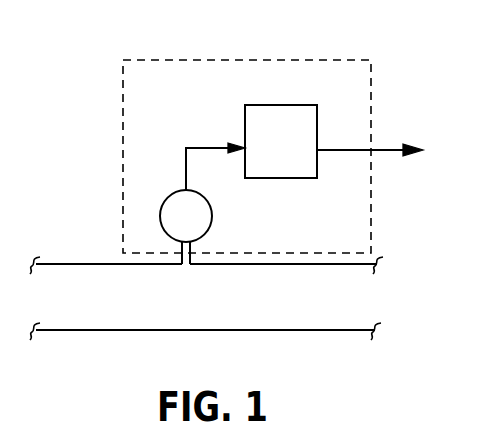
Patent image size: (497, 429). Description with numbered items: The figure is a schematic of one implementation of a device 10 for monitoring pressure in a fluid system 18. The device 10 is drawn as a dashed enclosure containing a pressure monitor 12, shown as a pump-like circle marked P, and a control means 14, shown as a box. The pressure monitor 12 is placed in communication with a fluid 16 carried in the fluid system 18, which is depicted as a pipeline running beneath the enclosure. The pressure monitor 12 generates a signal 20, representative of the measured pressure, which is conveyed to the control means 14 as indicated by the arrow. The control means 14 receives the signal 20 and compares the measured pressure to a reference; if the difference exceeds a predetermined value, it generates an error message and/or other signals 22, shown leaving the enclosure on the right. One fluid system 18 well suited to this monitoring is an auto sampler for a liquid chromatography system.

The device 10 is at (399, 62).
The pressure monitor 12 is at (212, 208).
The control means 14 is at (317, 120).
The fluid 16 is at (206, 298).
The fluid system 18 is at (312, 348).
The signal 20 is at (190, 148).
The other signals 22 is at (384, 152).